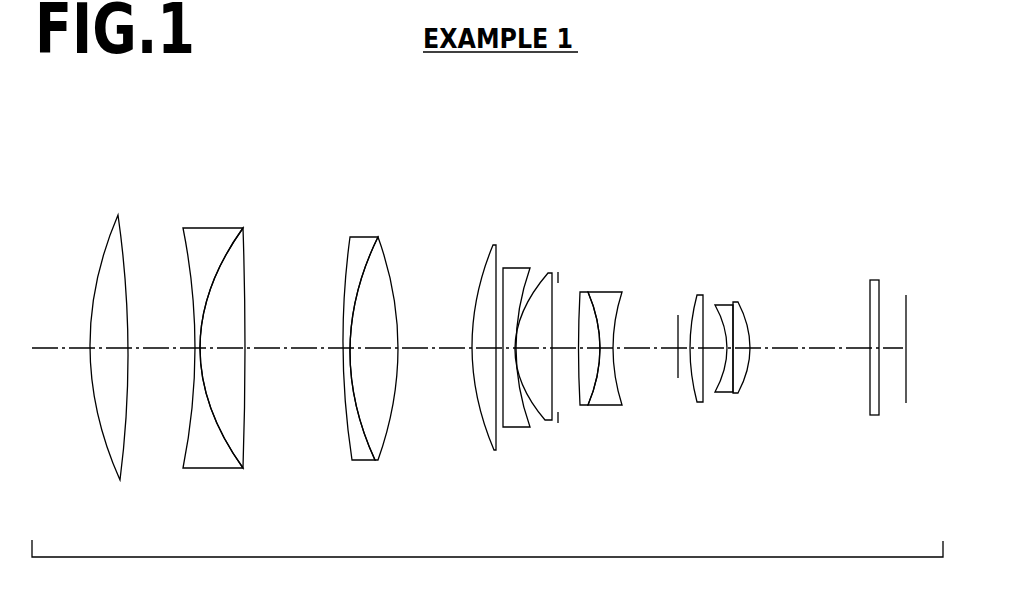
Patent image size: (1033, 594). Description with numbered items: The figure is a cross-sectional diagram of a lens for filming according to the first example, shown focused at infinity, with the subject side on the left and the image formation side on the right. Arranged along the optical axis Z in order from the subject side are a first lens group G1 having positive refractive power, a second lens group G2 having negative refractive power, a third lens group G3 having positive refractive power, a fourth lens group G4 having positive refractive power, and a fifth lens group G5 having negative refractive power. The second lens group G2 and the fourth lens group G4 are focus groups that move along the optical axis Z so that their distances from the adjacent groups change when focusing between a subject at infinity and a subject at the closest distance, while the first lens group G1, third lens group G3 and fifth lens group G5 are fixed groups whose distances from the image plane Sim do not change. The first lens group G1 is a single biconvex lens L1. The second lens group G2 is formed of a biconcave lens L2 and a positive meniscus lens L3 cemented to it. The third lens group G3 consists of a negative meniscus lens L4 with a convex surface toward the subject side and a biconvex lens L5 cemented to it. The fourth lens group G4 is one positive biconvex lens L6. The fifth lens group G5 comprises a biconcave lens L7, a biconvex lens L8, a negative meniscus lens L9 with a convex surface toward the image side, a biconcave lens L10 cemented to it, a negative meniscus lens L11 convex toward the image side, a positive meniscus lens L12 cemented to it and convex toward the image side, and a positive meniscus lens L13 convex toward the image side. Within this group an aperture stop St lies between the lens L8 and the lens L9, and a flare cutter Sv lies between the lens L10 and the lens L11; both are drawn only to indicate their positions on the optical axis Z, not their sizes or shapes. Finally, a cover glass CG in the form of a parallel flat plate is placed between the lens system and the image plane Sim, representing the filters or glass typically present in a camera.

The optical axis Z is at (53, 347).
The first lens group G1 is at (100, 131).
The second lens group G2 is at (255, 131).
The third lens group G3 is at (415, 131).
The fourth lens group G4 is at (448, 131).
The fifth lens group G5 is at (832, 131).
The biconvex lens L1 is at (118, 213).
The biconcave lens L2 is at (207, 227).
The positive meniscus lens L3 is at (243, 227).
The negative meniscus lens L4 is at (362, 236).
The biconvex lens L5 is at (379, 236).
The positive biconvex lens L6 is at (493, 244).
The biconcave lens L7 is at (520, 267).
The biconvex lens L8 is at (550, 272).
The negative meniscus lens L9 is at (586, 291).
The biconcave lens L10 is at (608, 291).
The negative meniscus lens L11 is at (725, 304).
The positive meniscus lens L12 is at (737, 301).
The positive meniscus lens L13 is at (798, 294).
The aperture stop St is at (558, 423).
The flare cutter Sv is at (678, 378).
The cover glass CG is at (873, 279).
The image plane Sim is at (906, 308).